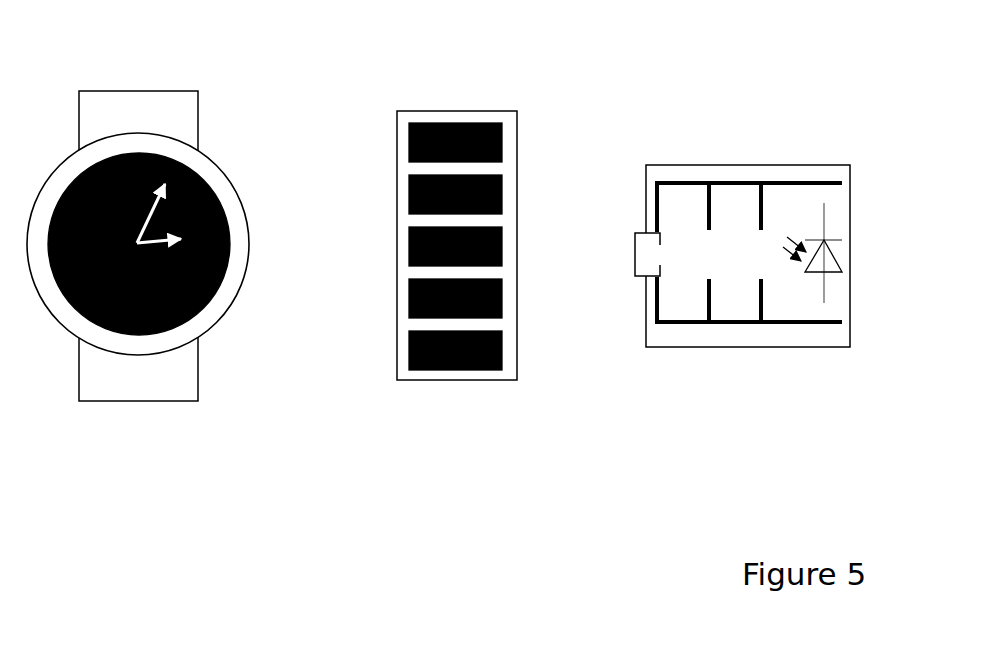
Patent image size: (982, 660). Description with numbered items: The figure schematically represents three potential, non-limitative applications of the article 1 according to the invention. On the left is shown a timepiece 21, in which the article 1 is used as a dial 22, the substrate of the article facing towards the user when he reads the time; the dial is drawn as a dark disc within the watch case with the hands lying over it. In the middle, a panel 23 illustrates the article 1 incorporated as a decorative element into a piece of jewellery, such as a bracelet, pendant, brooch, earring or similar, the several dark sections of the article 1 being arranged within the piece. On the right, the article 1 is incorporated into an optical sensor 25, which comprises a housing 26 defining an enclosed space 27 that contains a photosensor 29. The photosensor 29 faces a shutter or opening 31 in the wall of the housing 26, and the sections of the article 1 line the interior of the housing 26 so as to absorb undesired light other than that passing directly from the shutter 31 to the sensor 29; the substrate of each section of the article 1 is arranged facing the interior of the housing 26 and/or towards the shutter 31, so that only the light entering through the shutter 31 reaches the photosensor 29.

The article 1 is at (199, 166).
The timepiece 21 is at (201, 77).
The dial 22 is at (72, 312).
The solar panel 23 is at (489, 91).
The optical sensor 25 is at (745, 221).
The housing 26 is at (708, 348).
The enclosed space 27 is at (738, 250).
The photosensor 29 is at (833, 258).
The shutter 31 is at (636, 252).